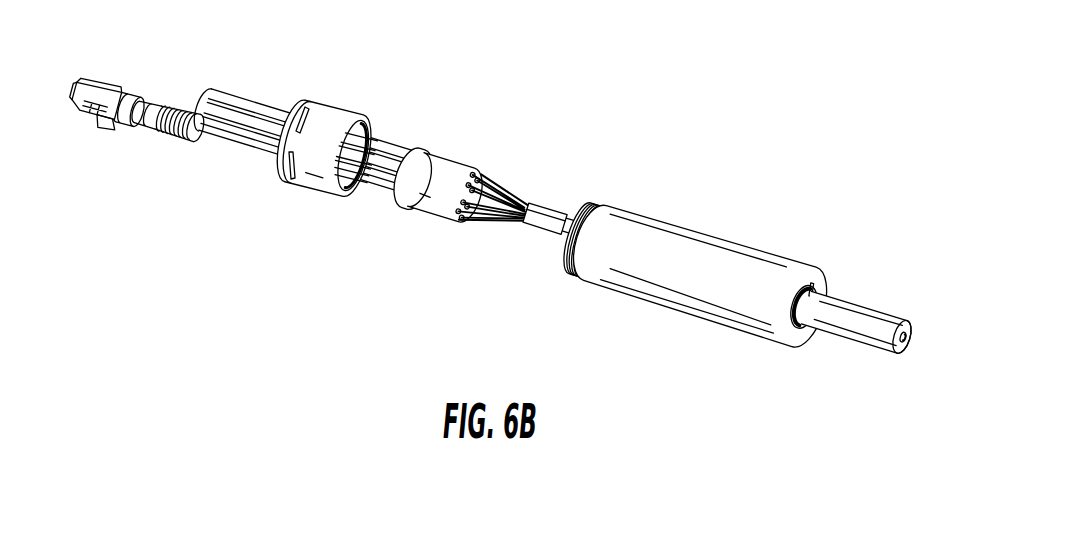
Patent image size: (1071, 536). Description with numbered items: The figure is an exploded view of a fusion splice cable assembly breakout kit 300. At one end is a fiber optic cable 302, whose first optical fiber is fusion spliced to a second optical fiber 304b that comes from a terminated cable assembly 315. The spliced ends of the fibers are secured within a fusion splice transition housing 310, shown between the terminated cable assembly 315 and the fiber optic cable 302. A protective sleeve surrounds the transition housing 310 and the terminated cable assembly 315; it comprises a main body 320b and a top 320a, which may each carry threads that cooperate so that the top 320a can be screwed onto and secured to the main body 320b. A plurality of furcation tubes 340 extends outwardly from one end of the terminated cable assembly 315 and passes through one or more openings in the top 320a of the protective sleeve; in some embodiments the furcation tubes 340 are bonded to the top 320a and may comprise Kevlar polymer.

The fusion splice cable assembly breakout kit 300 is at (765, 136).
The fiber optic cable 302 is at (864, 300).
The second optical fiber 304b is at (484, 178).
The fusion splice transition housing 310 is at (563, 206).
The terminated cable assembly 315 is at (455, 172).
The top of the protective sleeve 320a is at (333, 120).
The main body of the protective sleeve 320b is at (658, 288).
The furcation tubes 340 is at (265, 105).